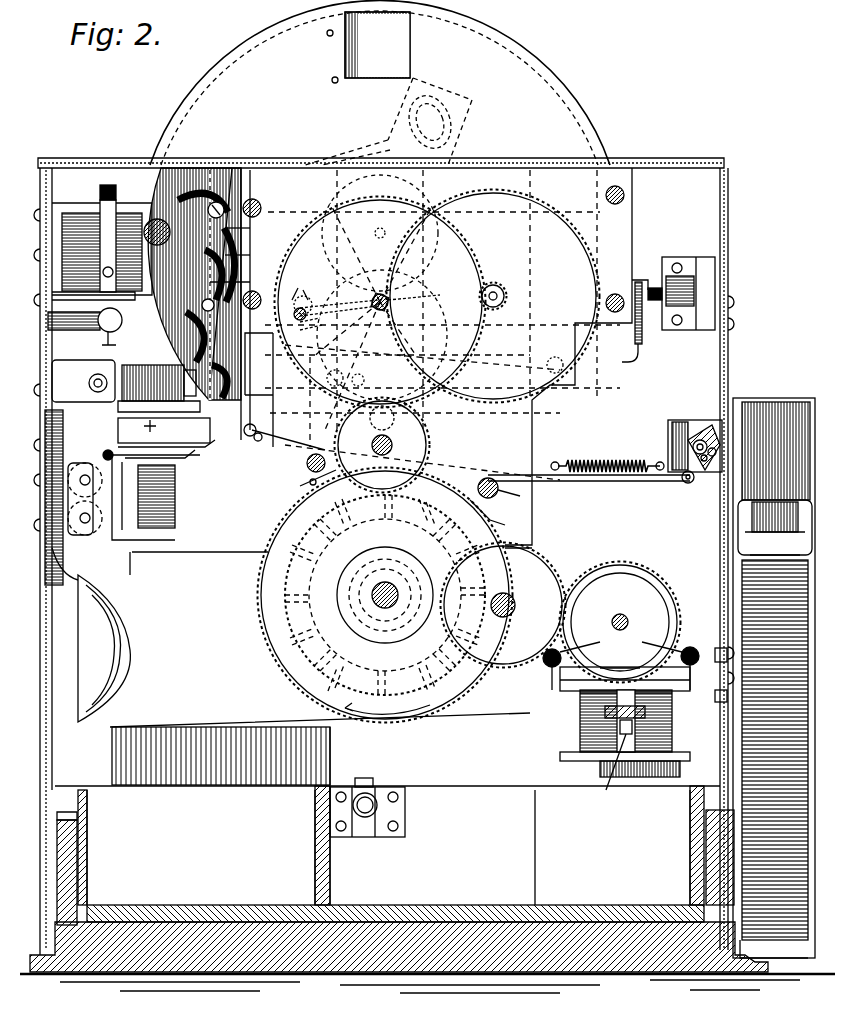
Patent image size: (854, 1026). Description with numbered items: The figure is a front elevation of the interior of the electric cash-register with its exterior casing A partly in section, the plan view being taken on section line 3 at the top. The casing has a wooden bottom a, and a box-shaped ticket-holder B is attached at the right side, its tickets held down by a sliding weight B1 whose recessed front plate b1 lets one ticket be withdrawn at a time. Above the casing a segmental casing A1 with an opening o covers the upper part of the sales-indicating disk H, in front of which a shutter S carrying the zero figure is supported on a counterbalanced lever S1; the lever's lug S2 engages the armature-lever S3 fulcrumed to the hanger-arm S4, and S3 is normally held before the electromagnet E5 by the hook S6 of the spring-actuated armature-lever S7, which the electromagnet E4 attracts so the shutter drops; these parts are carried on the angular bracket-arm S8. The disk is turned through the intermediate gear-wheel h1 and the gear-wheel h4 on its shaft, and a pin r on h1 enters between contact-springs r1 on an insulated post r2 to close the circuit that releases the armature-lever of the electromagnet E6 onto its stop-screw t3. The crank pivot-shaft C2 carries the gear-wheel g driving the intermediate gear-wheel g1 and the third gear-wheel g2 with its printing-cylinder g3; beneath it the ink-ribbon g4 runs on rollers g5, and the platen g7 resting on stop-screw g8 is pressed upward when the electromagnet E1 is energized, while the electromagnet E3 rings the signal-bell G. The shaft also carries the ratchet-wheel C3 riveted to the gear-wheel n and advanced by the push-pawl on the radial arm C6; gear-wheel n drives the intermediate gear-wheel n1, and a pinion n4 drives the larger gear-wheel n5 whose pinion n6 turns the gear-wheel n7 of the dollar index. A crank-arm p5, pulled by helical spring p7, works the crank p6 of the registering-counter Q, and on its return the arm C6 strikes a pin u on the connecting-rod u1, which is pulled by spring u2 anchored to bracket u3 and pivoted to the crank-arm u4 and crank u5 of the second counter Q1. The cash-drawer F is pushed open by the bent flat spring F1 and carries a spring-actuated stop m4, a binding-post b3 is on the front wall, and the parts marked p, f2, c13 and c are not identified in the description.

The section line 3 is at (800, 162).
The exterior casing A is at (668, 168).
The segmental casing A1 is at (380, 82).
The sales-indicating disk H is at (410, 40).
The opening o is at (345, 35).
The pin p is at (324, 75).
The shutter S is at (456, 128).
The fulcrumed counterbalanced lever S1 is at (345, 154).
The larger gear-wheel n5 is at (493, 296).
The pinion n6 is at (508, 282).
The pin r is at (380, 312).
The gear-wheel h4 is at (327, 238).
The insulated post r2 is at (301, 296).
The contact-springs r1 is at (339, 309).
The pinion n4 is at (414, 308).
The gear-wheel n7 is at (312, 336).
The intermediate gear-wheel n1 is at (428, 444).
The larger intermediate gear-wheel h1 is at (482, 420).
The lug S2 is at (248, 236).
The hanger-arm S4 is at (248, 262).
The armature-lever S3 is at (195, 364).
The electromagnet E6 is at (128, 232).
The stop-screw t3 is at (88, 323).
The angular bracket-arm S8 is at (110, 474).
The electromagnet E5 is at (160, 380).
The electromagnet E3 is at (90, 470).
The spring-actuated armature-lever S7 is at (185, 458).
The hook S6 is at (200, 458).
The electromagnet E4 is at (175, 498).
The signal-bell G is at (91, 635).
The registering-counter Q is at (685, 265).
The crank p6 is at (655, 270).
The crank-arm p5 is at (636, 288).
The helical spring p7 is at (630, 362).
The helical spring u2 is at (607, 454).
The connecting-rod u1 is at (628, 485).
The pin u is at (300, 486).
The pivot f2 is at (305, 461).
The binding-post b3 is at (520, 496).
The arm c13 is at (492, 512).
The second counting device Q1 is at (705, 430).
The supporting-bracket u3 is at (688, 440).
The crank u5 is at (703, 442).
The crank-arm u4 is at (690, 483).
The ticket-holder B is at (770, 400).
The sliding weight B1 is at (775, 527).
The recessed front plate b1 is at (775, 545).
The ratchet-wheel C3 is at (285, 600).
The gear-wheel n is at (385, 595).
The gear-wheel g is at (385, 596).
The radial arm C6 is at (398, 578).
The pivot-shaft C2 is at (398, 595).
The intermediate gear-wheel g1 is at (515, 640).
The printing-cylinder g3 is at (632, 588).
The ink-ribbon g4 is at (692, 648).
The third gear-wheel g2 is at (693, 652).
The rollers g5 is at (548, 668).
The plate c is at (625, 678).
The platen g7 is at (575, 696).
The electromagnet E1 is at (580, 735).
The stop-screw g8 is at (577, 756).
The bent spring F1 is at (110, 768).
The cash-drawer F is at (395, 855).
The spring-actuated stop m4 is at (362, 778).
The bottom a is at (427, 957).